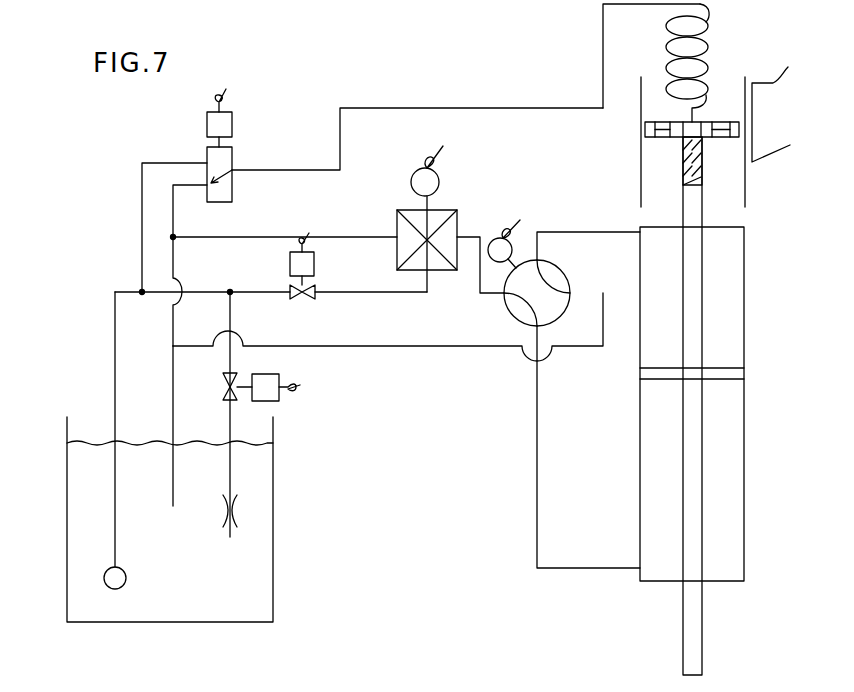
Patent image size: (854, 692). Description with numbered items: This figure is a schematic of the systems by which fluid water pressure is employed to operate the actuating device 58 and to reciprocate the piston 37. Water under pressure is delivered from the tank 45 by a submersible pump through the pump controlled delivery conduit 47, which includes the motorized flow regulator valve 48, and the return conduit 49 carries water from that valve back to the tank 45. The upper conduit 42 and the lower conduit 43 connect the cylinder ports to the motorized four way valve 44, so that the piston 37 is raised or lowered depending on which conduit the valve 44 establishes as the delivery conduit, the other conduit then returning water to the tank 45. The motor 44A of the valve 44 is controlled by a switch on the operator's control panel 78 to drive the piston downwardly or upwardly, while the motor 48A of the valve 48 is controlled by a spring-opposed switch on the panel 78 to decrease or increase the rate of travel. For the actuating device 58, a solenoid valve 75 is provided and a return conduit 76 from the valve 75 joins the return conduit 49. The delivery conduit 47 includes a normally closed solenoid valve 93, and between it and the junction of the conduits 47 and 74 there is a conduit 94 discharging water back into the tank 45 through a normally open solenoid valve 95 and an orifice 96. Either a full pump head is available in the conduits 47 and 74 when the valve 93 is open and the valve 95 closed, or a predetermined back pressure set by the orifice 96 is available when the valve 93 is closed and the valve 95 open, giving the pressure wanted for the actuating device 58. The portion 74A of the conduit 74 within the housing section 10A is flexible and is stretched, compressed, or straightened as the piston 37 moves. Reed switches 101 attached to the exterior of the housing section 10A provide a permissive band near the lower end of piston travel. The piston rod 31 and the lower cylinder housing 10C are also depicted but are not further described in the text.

The control panel 78 is at (518, 54).
The conduit 74 is at (405, 108).
The flexible conduit portion 74A is at (708, 50).
The actuating device 58 is at (704, 119).
The reed switches 101 is at (765, 132).
The housing section 10A is at (640, 187).
The piston rod 31 is at (703, 338).
The hydraulic cylinder 10C is at (745, 486).
The piston 37 is at (668, 385).
The solenoid valve 75 is at (237, 156).
The return conduit 76 is at (175, 212).
The conduit 47 is at (160, 295).
The return conduit 49 is at (253, 242).
The conduit 94 is at (232, 306).
The normally closed solenoid valve 93 is at (318, 285).
The normally open solenoid valve 95 is at (252, 370).
The orifice 96 is at (244, 510).
The tank 45 is at (67, 552).
The motorized flow regulator valve 48 is at (392, 219).
The motor 48A is at (453, 171).
The motor 44A is at (510, 224).
The motorized four way valve 44 is at (500, 311).
The upper conduit 42 is at (566, 232).
The lower conduit 43 is at (588, 570).